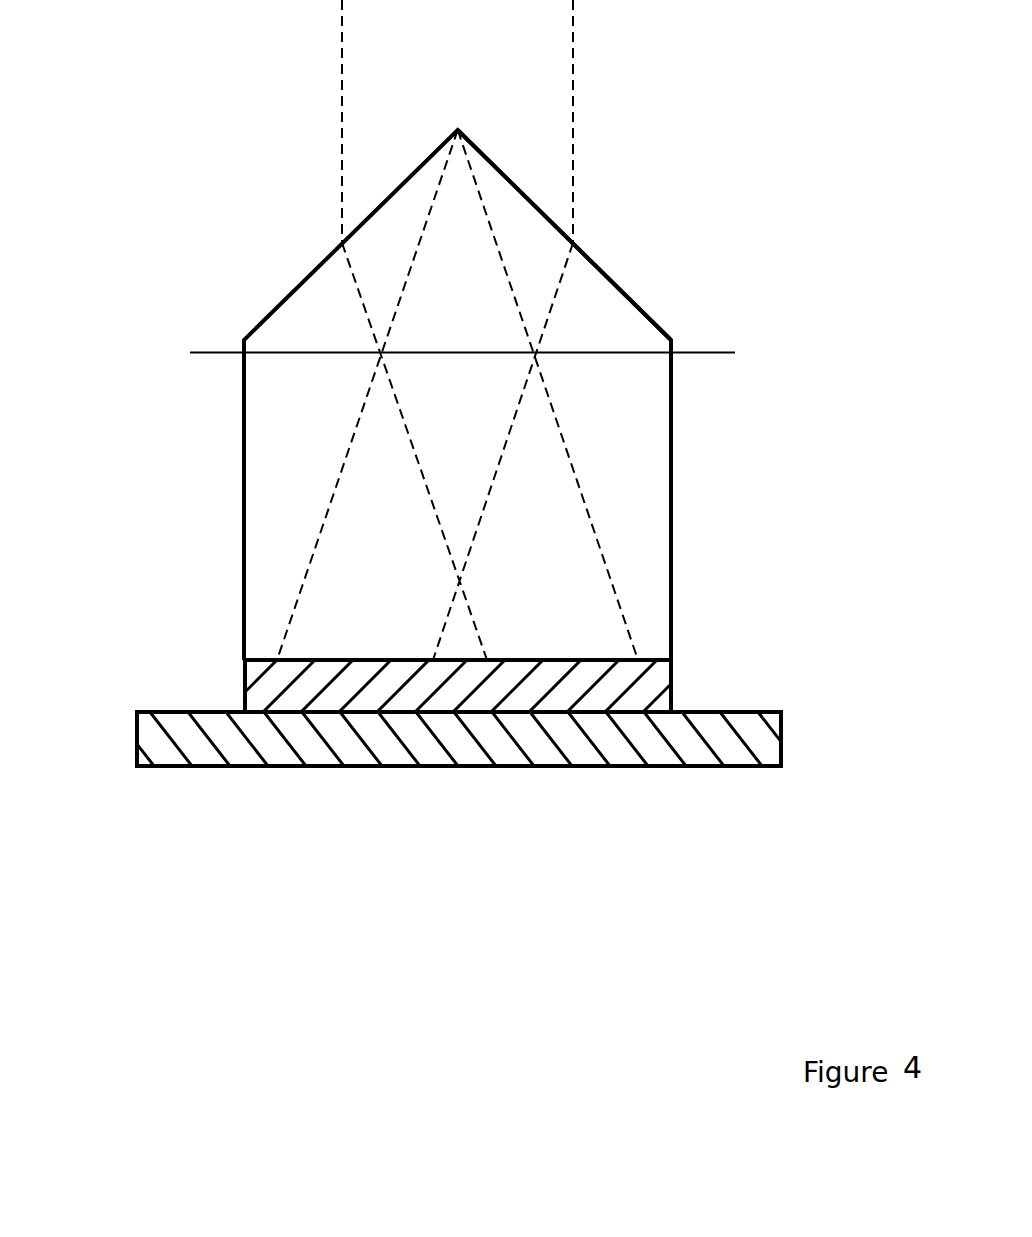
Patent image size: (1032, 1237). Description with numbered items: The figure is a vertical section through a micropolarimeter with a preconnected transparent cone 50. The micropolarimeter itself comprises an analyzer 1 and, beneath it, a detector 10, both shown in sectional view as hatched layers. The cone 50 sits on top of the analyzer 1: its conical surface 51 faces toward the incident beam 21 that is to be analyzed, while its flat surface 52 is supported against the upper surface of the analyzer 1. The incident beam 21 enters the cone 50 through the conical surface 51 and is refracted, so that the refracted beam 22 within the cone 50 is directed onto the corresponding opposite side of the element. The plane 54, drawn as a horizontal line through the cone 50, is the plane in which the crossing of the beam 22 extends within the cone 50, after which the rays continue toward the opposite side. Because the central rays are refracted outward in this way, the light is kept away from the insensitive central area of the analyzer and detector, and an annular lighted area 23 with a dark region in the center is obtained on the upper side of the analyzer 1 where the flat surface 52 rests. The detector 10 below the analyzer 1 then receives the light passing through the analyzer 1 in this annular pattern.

The beam 21 is at (543, 62).
The cone 50 is at (612, 318).
The conical surface 51 is at (613, 280).
The plane 54 is at (220, 350).
The beam 22 is at (555, 573).
The analyzer 1 is at (712, 690).
The detector 10 is at (813, 748).
The annular lighted area 23 is at (327, 658).
The flat surface 52 is at (533, 660).